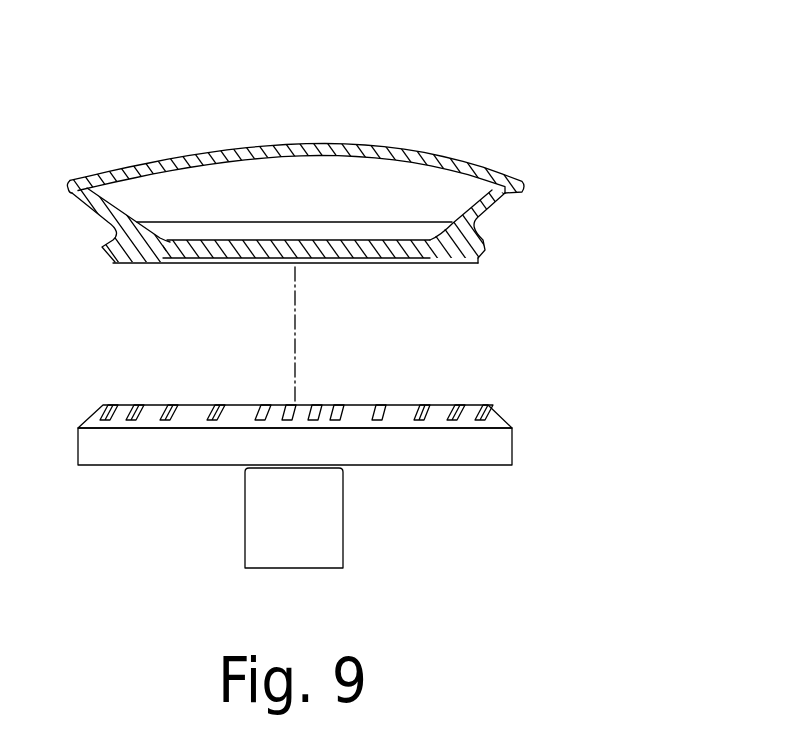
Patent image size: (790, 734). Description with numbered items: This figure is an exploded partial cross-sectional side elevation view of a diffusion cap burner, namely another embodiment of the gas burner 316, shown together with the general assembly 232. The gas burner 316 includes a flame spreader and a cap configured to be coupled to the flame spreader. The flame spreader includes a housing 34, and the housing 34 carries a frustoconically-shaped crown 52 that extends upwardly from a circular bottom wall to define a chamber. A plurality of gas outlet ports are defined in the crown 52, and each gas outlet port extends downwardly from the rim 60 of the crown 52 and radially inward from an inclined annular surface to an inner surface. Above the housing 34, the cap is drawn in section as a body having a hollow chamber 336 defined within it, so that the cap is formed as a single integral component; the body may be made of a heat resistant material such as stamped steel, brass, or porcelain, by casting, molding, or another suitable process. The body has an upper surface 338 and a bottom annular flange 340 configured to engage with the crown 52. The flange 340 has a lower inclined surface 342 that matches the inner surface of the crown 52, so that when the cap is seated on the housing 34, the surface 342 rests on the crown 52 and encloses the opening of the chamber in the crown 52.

The cap assembly 232 is at (522, 110).
The gas burner 316 is at (592, 210).
The hollow chamber 336 is at (248, 167).
The upper surface 338 is at (393, 158).
The bottom annular flange 340 is at (486, 242).
The lower inclined surface 342 is at (481, 264).
The housing 34 is at (520, 451).
The crown 52 is at (95, 415).
The rim 60 is at (355, 403).